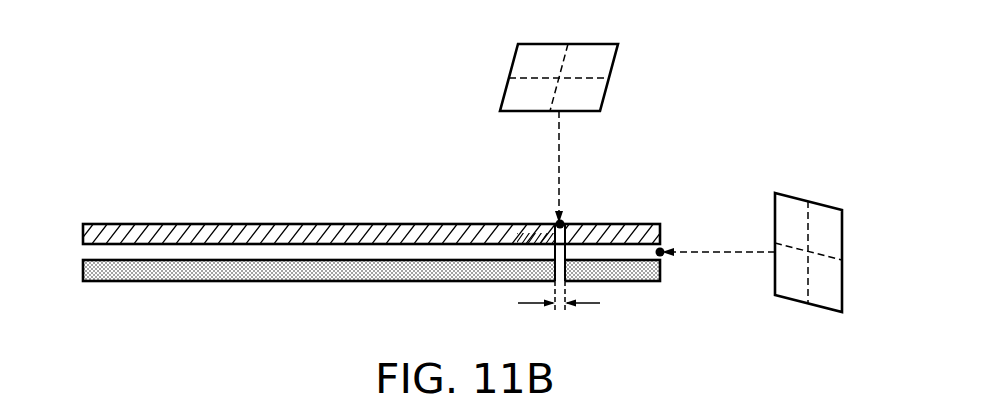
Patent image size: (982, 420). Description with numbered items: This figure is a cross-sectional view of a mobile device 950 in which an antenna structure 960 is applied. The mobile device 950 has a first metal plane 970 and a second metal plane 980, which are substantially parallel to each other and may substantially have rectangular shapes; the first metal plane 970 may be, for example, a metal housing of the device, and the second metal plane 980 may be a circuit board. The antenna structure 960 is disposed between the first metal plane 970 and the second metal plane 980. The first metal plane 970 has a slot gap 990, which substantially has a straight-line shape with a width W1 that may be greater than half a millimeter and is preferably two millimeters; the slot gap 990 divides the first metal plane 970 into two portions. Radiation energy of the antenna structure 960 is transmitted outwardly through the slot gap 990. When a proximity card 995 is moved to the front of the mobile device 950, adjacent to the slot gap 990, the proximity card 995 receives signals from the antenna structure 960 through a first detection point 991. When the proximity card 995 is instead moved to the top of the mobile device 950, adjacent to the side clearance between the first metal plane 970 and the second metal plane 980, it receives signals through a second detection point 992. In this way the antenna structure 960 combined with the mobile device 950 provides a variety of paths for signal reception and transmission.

The mobile device 950 is at (127, 162).
The antenna structure 960 is at (637, 256).
The first metal plane 970 is at (318, 230).
The second metal plane 980 is at (318, 280).
The slot gap 990 is at (521, 237).
The first detection point 991 is at (555, 221).
The second detection point 992 is at (664, 250).
The proximity card 995 is at (590, 95).
The width of the slot gap W1 is at (559, 323).